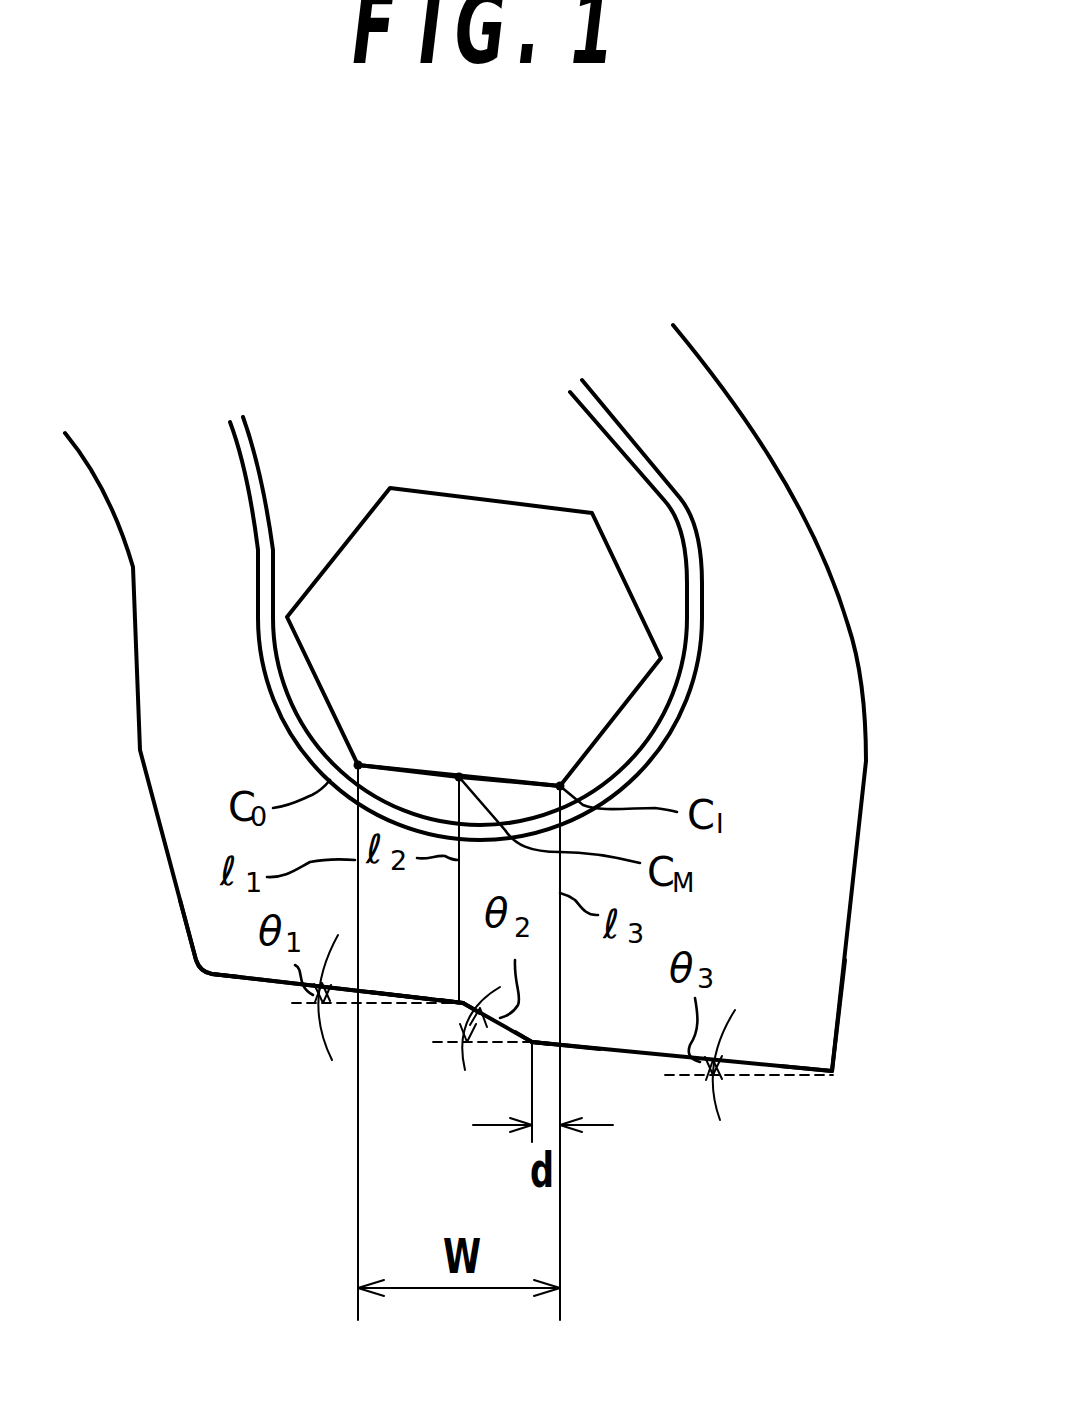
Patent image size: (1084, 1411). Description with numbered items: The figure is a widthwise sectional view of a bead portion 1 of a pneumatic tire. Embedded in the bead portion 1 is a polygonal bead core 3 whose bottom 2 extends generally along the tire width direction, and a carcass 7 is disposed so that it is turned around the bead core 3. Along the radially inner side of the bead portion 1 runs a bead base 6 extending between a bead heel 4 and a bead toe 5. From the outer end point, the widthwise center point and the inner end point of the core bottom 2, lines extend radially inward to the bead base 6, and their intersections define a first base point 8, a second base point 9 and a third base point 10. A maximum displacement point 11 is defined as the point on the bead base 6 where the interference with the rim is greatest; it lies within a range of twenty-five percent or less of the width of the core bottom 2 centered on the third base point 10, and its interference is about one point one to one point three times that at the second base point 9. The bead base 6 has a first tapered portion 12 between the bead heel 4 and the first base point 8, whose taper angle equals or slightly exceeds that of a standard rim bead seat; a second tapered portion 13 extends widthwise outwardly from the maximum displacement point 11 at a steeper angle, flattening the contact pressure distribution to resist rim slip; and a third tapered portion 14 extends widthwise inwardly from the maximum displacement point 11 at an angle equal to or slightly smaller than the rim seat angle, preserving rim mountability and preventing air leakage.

The bead portion 1 is at (785, 459).
The bottom 2 is at (523, 785).
The polygonal bead core 3 is at (600, 633).
The bead heel 4 is at (200, 967).
The bead toe 5 is at (833, 1072).
The bead base 6 is at (416, 996).
The carcass 7 is at (605, 423).
The first base point 8 is at (358, 990).
The second base point 9 is at (462, 1001).
The third base point 10 is at (563, 1045).
The maximum displacement point 11 is at (530, 1048).
The first tapered portion 12 is at (263, 985).
The second tapered portion 13 is at (458, 1007).
The third tapered portion 14 is at (638, 1055).